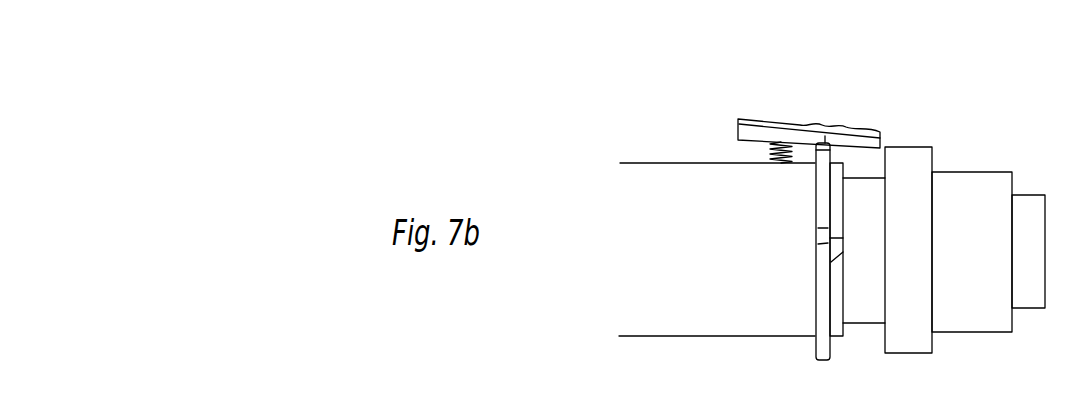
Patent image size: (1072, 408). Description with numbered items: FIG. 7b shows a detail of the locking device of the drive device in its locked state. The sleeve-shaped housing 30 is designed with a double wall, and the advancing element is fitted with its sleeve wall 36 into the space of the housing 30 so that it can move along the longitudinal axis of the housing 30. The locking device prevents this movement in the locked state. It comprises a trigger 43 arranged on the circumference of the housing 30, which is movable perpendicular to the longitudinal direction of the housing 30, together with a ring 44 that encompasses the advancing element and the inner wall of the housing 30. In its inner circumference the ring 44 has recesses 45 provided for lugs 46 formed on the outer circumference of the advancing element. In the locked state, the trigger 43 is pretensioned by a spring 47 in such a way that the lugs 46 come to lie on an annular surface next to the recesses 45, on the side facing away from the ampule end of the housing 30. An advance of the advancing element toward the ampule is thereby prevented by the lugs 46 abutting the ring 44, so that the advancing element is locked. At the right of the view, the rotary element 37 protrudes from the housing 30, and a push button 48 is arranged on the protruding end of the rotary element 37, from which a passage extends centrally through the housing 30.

The housing 30 is at (908, 187).
The sleeve wall 36 is at (661, 215).
The rotary element 37 is at (965, 210).
The trigger 43 is at (805, 130).
The ring 44 is at (819, 177).
The recesses 45 is at (817, 243).
The lugs 46 is at (831, 257).
The spring 47 is at (773, 141).
The push button 48 is at (1033, 213).